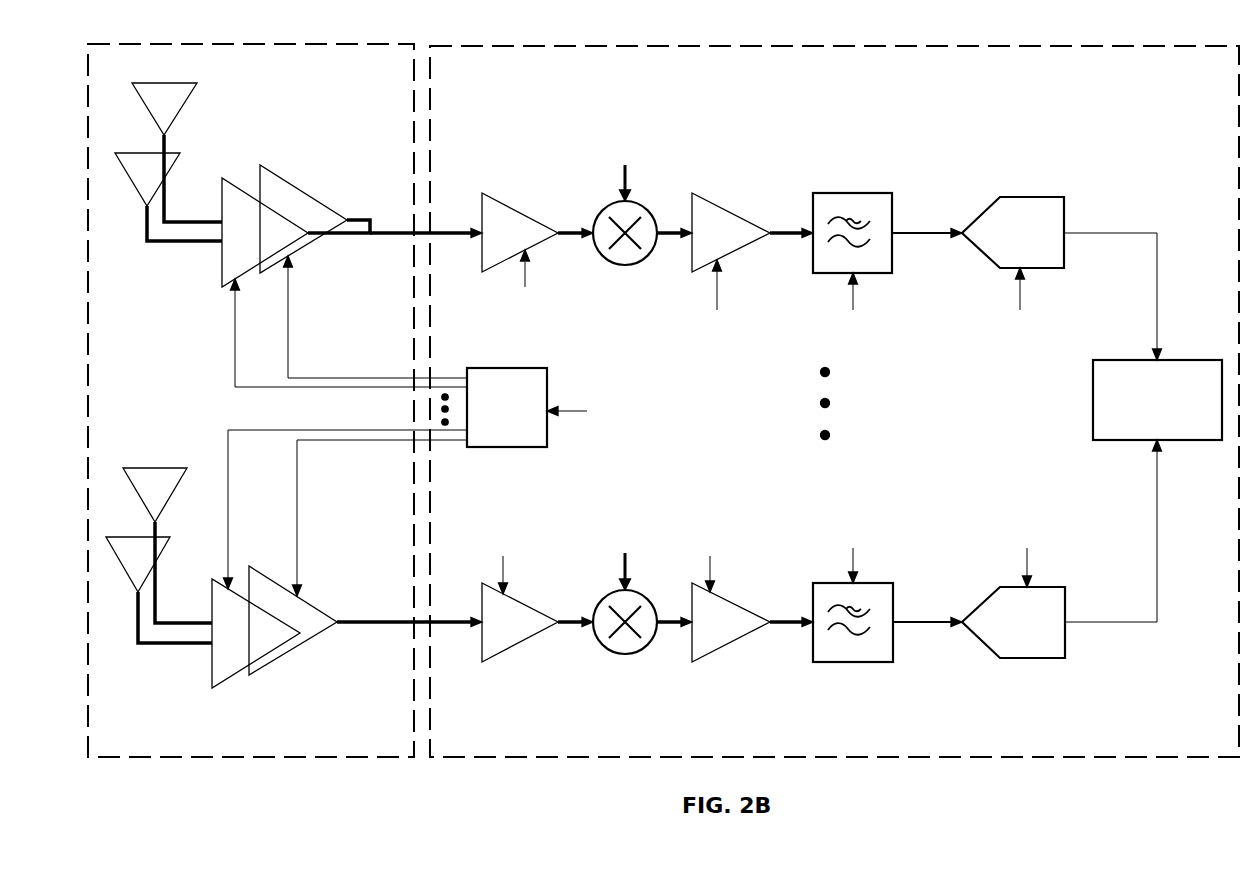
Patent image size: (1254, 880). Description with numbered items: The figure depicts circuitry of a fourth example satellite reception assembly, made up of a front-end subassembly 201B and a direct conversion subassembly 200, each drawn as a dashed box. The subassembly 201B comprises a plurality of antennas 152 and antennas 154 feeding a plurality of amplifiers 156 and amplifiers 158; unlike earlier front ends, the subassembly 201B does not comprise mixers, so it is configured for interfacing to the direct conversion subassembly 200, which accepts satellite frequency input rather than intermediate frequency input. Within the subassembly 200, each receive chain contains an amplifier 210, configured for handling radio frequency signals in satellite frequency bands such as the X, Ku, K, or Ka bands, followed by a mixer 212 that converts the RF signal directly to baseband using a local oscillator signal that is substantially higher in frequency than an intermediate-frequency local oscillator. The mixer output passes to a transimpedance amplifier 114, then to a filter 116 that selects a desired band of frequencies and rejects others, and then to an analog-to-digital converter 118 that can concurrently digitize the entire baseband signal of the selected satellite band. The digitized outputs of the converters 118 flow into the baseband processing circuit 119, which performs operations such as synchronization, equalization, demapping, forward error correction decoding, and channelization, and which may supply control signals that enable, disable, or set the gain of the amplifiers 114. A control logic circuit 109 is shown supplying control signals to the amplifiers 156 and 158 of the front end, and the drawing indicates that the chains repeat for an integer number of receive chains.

The subassembly 201B is at (240, 45).
The direct conversion subassembly 200 is at (843, 46).
The antenna 152 is at (175, 84).
The antenna 154 is at (136, 145).
The amplifier 156 is at (233, 173).
The amplifier 158 is at (282, 165).
The amplifier 210 is at (526, 204).
The mixer 212 is at (653, 204).
The amplifier 114 is at (738, 204).
The filter 116 is at (876, 185).
The analog-to-digital converter 118 is at (1041, 188).
The baseband processing circuit 119 is at (1189, 359).
The control logic circuit 109 is at (541, 360).